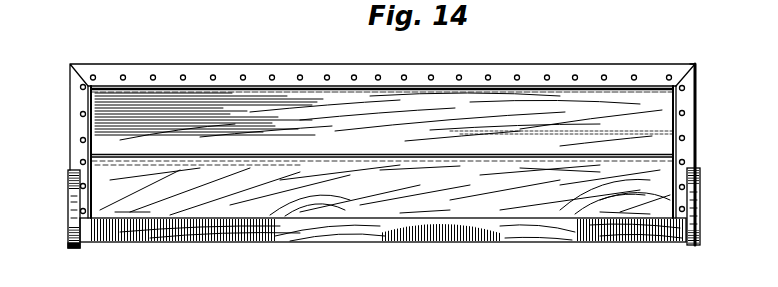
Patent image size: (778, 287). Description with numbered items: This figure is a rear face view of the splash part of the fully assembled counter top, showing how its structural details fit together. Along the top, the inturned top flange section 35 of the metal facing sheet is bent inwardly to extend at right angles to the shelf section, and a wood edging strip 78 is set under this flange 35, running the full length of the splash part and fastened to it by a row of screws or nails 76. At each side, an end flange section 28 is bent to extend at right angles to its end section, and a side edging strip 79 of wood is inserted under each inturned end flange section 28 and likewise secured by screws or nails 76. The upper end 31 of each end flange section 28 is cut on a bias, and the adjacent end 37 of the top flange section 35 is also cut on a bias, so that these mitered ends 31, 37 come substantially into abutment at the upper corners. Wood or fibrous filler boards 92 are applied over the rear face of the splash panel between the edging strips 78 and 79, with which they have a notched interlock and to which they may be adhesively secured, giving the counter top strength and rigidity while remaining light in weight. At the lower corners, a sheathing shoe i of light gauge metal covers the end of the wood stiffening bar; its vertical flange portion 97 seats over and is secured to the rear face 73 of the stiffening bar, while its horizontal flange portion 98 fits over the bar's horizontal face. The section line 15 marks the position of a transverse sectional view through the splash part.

The section line 15 is at (33, 97).
The end flange section 28 is at (697, 130).
The upper end of end flange section 31 is at (697, 67).
The top flange section 35 is at (596, 63).
The end of top flange section 37 is at (685, 72).
The rear face of stiffening bar 73 is at (223, 241).
The screws or nails 76 is at (80, 87).
The wood edging strip 78 is at (481, 87).
The side edging strip 79 is at (92, 142).
The filler boards 92 is at (382, 154).
The vertical flange portion 97 is at (76, 224).
The horizontal flange portion 98 is at (74, 247).
The sheathing shoe i is at (60, 209).